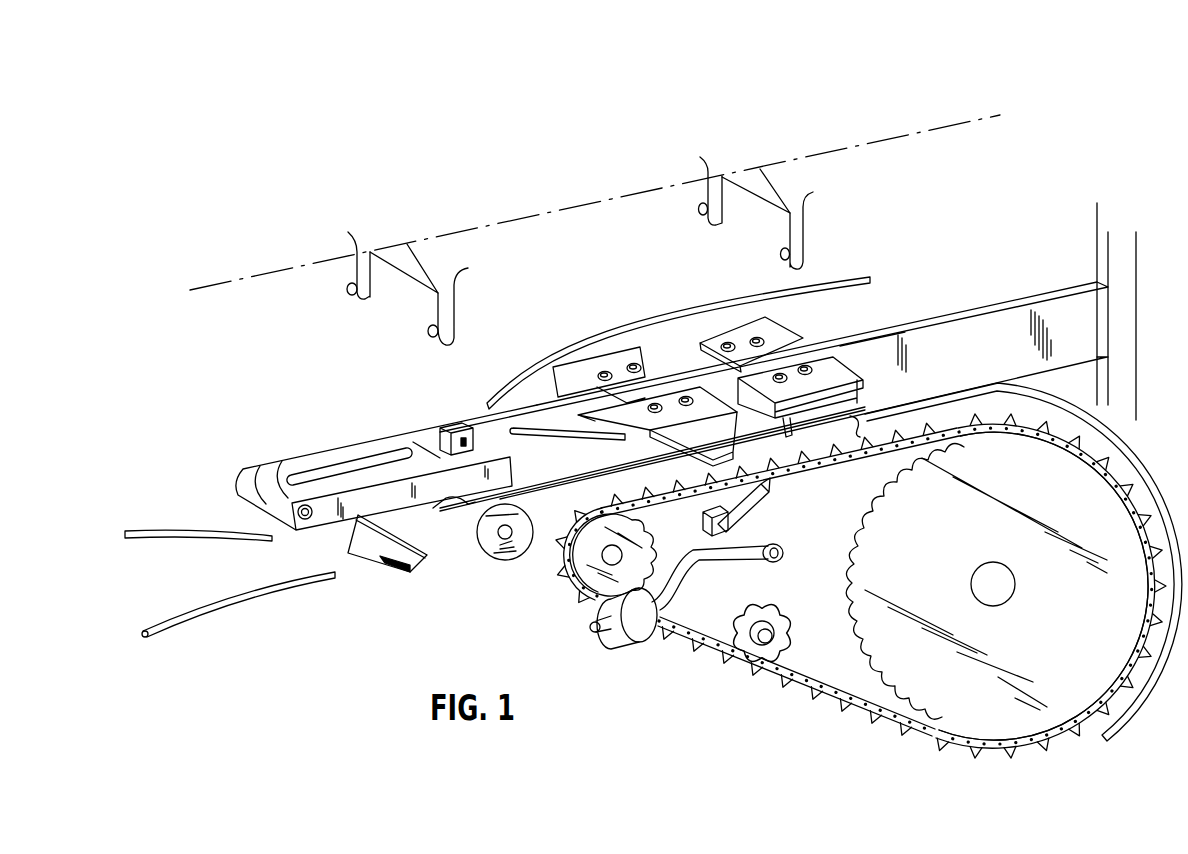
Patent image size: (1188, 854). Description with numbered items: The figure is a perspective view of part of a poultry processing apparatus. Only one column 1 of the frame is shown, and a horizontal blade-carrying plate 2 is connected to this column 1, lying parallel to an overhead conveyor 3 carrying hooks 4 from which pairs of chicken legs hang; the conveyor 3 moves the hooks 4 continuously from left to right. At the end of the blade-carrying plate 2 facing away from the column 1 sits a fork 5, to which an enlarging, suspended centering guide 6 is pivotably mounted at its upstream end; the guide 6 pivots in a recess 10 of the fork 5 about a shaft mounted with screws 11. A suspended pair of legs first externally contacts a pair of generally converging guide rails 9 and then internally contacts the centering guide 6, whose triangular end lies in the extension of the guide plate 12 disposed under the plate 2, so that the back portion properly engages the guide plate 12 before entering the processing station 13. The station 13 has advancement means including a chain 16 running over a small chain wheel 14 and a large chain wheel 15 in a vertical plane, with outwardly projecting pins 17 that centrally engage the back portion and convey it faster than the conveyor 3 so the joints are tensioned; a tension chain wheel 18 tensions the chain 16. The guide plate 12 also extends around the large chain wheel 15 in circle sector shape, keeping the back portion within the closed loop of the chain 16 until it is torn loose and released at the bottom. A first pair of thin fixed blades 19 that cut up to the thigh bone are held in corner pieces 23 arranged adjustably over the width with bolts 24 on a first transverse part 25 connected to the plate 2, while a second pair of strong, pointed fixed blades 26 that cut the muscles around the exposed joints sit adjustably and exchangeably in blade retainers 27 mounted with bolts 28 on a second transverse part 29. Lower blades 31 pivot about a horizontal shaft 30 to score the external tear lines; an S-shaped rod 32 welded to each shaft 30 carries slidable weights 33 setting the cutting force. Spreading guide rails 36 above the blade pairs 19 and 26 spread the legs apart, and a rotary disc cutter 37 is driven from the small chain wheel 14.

The column 1 is at (1127, 398).
The blade-carrying plate 2 is at (1076, 303).
The overhead conveyor 3 is at (882, 134).
The hooks 4 is at (468, 268).
The fork 5 is at (420, 442).
The centering guide 6 is at (390, 546).
The guide rails 9 is at (198, 607).
The recess 10 is at (347, 467).
The screws 11 is at (303, 522).
The guide plate 12 is at (470, 506).
The processing station 13 is at (717, 663).
The small chain wheel 14 is at (588, 552).
The large chain wheel 15 is at (1058, 652).
The chain 16 is at (830, 698).
The pins 17 is at (845, 703).
The tension chain wheel 18 is at (774, 616).
The first pair of fixed blades 19 is at (658, 455).
The corner pieces 23 is at (725, 447).
The bolts 24 is at (627, 366).
The first transverse part 25 is at (654, 383).
The second pair of fixed blades 26 is at (853, 437).
The blade retainers 27 is at (870, 357).
The bolts 28 is at (800, 372).
The second transverse part 29 is at (790, 365).
The horizontal shaft 30 is at (704, 534).
The lower blades 31 is at (767, 492).
The rod 32 is at (684, 582).
The weights 33 is at (643, 642).
The spreading guide rails 36 is at (528, 372).
The rotary disc cutter 37 is at (505, 555).